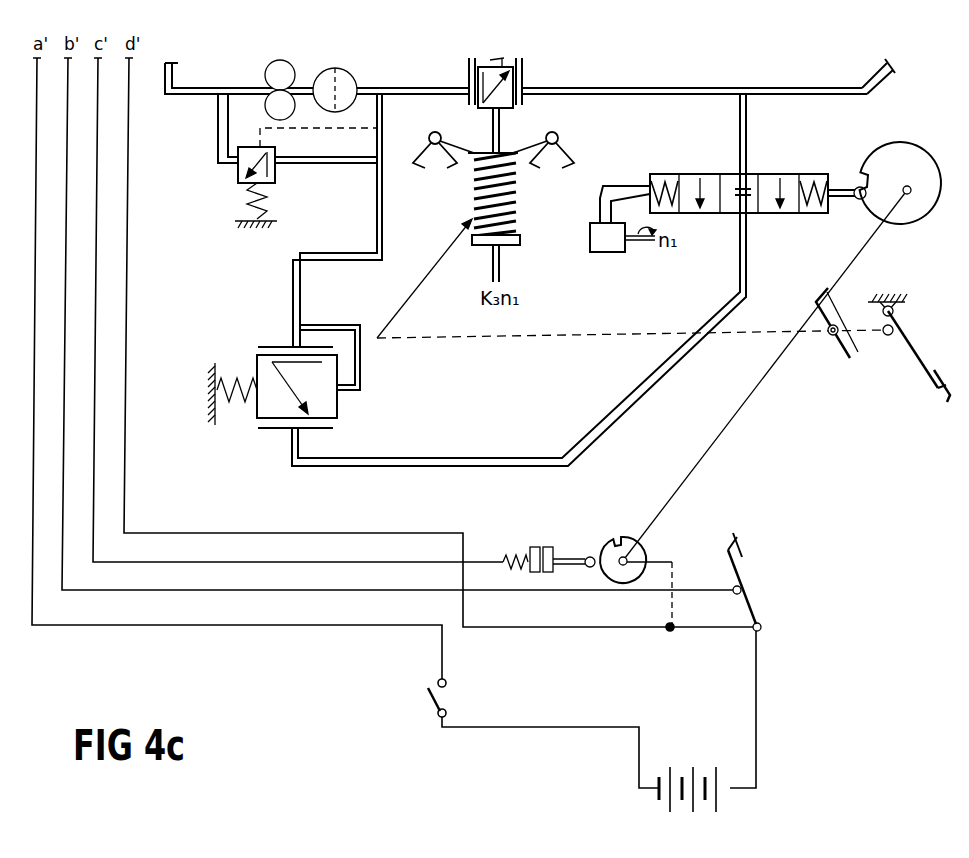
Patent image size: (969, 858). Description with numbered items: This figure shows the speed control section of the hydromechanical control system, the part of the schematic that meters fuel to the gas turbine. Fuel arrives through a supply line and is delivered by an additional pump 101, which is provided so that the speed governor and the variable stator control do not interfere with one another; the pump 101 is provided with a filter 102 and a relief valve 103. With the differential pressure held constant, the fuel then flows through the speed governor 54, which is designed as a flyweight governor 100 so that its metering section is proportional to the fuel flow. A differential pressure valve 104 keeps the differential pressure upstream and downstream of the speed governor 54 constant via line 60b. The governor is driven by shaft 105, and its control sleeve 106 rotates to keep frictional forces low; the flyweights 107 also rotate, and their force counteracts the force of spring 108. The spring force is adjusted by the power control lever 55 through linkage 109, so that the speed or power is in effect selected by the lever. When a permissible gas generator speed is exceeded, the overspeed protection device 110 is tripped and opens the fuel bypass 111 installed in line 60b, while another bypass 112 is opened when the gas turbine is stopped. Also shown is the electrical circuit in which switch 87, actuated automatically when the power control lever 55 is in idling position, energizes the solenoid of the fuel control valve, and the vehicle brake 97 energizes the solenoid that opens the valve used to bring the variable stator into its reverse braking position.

The pump 101 is at (267, 71).
The filter 102 is at (350, 76).
The speed governor 54 is at (515, 68).
The relief valve 103 is at (277, 183).
The flyweights 107 is at (565, 142).
The flyweight governor 100 is at (458, 170).
The spring 108 is at (519, 206).
The control sleeve 106 is at (474, 247).
The shaft 105 is at (500, 266).
The linkage 109 is at (410, 298).
The differential pressure valve 104 is at (338, 408).
The line 60b is at (509, 457).
The bypass 112 is at (793, 178).
The overspeed protection device 110 is at (607, 253).
The fuel bypass 111 is at (715, 239).
The power control lever 55 is at (906, 343).
The switch 87 is at (540, 547).
The vehicle brake 97 is at (746, 579).